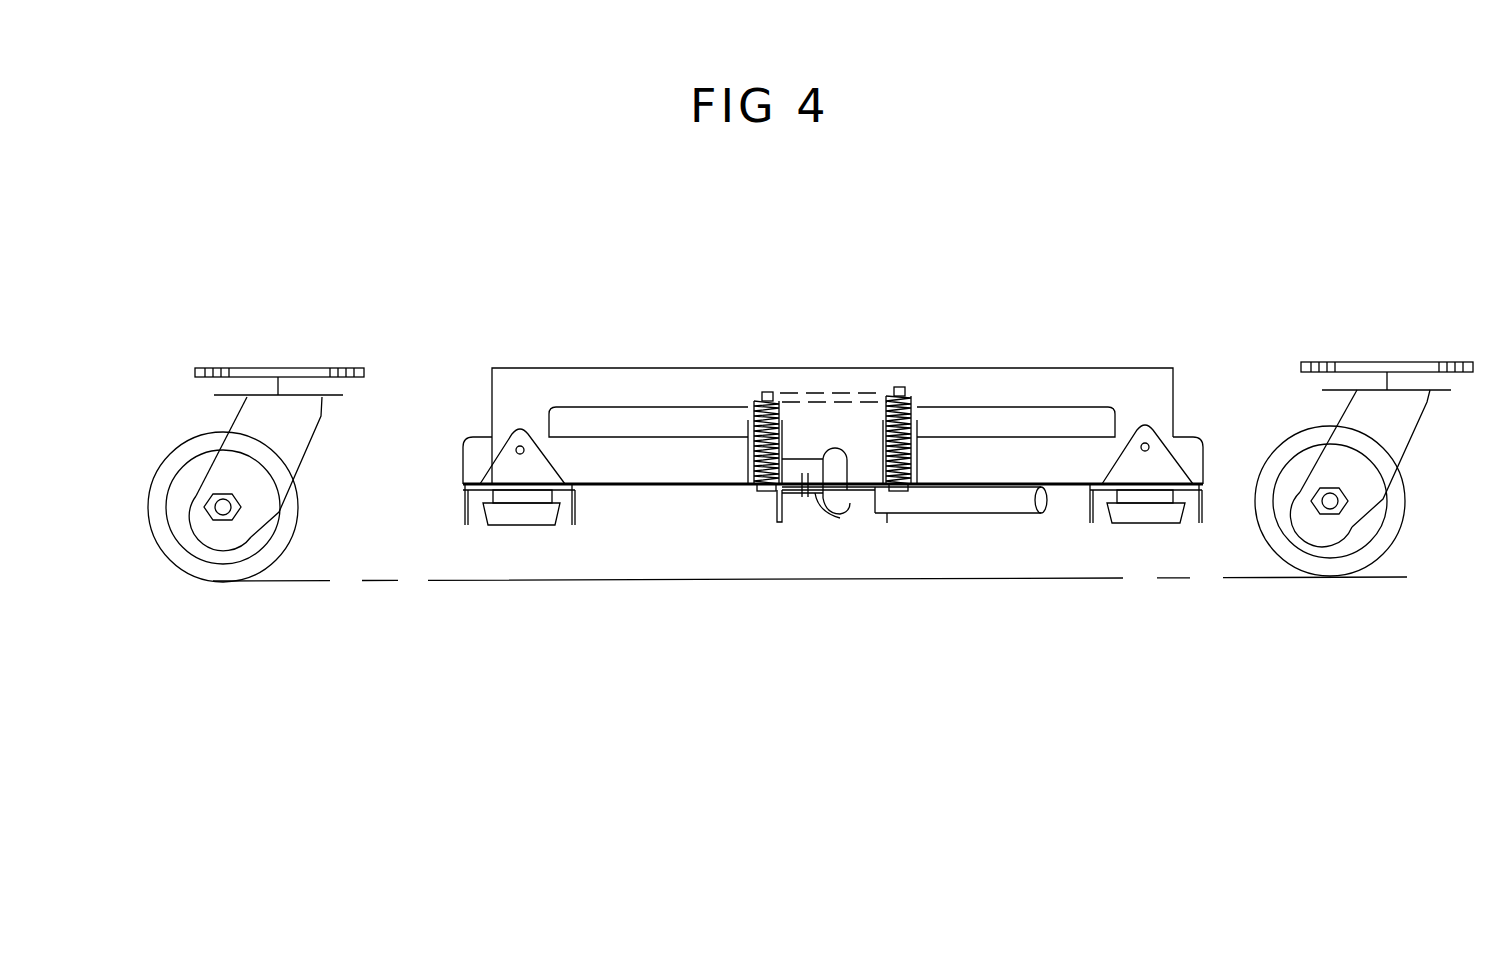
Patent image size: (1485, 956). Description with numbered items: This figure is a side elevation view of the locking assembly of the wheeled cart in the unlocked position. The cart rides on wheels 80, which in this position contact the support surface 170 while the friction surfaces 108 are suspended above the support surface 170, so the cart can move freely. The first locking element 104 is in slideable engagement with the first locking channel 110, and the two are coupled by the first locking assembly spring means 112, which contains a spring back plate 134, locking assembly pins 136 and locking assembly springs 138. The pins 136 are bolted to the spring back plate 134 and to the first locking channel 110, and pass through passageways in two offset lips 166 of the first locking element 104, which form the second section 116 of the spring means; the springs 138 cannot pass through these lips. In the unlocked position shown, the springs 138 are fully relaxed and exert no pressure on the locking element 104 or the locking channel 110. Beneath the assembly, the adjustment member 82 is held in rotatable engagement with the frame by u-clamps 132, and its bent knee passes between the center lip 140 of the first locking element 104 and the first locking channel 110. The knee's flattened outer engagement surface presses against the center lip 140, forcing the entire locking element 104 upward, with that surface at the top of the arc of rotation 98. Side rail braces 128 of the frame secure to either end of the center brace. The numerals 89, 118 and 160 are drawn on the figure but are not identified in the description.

The wheels 80 is at (188, 575).
The adjustment member 82 is at (1000, 513).
The linkage 89 is at (838, 548).
The top of the arc of rotation 98 is at (834, 460).
The first locking element 104 is at (1095, 368).
The friction surfaces 108 is at (500, 523).
The first locking channel 110 is at (750, 456).
The first locking assembly spring means 112 is at (850, 352).
The second section of the first locking assembly spring means 116 is at (779, 492).
The base plate 118 is at (762, 487).
The side rail braces 128 is at (1203, 442).
The u-clamps 132 is at (843, 512).
The spring back plate 134 is at (808, 393).
The locking assembly pins 136 is at (766, 390).
The locking assembly springs 138 is at (750, 402).
The center lip 140 is at (812, 492).
The mounting bracket 160 is at (492, 408).
The offset lips 166 is at (790, 495).
The support surface 170 is at (338, 582).